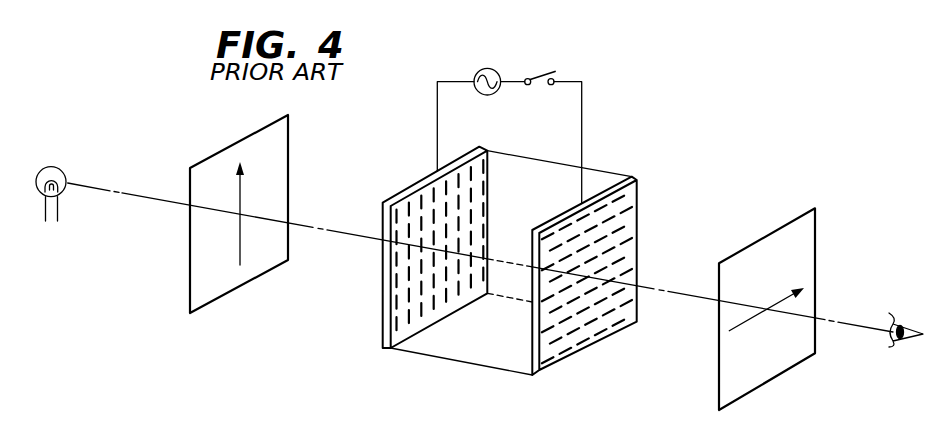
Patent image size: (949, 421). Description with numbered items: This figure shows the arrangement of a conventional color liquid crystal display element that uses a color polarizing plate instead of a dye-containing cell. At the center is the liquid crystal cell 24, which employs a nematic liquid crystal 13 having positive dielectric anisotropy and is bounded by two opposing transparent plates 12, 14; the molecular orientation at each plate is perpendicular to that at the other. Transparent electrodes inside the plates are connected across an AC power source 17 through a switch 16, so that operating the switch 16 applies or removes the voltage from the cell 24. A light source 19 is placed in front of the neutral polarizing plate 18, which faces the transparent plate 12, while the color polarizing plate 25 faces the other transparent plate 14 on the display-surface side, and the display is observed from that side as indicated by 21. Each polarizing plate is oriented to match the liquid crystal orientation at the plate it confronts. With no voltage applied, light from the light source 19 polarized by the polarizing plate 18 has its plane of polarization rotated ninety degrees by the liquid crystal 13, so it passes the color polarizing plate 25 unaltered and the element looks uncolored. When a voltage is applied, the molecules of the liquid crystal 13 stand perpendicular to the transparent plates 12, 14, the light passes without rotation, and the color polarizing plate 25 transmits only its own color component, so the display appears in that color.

The transparent plate 12 is at (382, 335).
The liquid crystal 13 is at (433, 193).
The transparent plate 14 is at (542, 366).
The switch 16 is at (538, 70).
The AC power source 17 is at (483, 67).
The neutral polarizing plate 18 is at (233, 145).
The light source 19 is at (58, 166).
The observation side 21 is at (903, 320).
The liquid crystal cell 24 is at (467, 365).
The color polarizing plate 25 is at (755, 242).